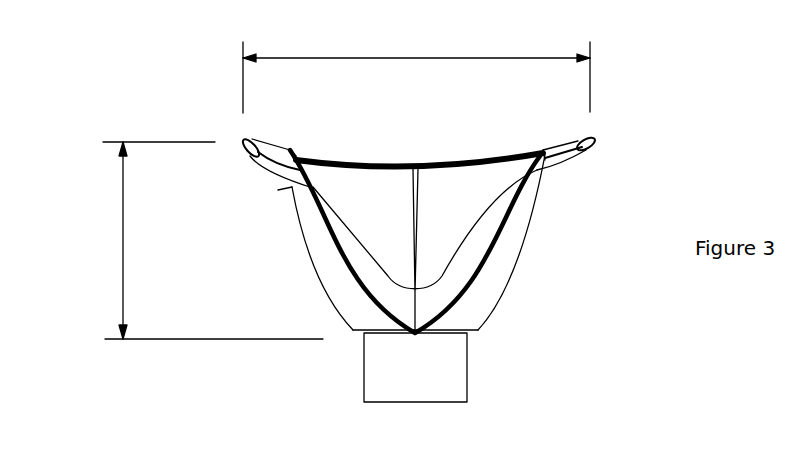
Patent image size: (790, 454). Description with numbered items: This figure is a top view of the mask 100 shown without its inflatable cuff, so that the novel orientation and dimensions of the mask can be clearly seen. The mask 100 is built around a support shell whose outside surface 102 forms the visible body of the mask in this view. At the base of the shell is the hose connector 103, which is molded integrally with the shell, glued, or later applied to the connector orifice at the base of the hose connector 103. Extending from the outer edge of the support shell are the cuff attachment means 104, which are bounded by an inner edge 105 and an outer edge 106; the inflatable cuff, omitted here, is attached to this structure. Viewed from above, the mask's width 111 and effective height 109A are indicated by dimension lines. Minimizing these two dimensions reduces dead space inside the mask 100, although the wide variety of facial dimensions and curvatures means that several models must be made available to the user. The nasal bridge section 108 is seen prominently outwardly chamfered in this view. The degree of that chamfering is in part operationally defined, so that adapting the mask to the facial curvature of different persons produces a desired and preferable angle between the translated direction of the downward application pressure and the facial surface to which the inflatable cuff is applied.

The mask 100 is at (449, 252).
The outside surface 102 is at (513, 238).
The hose connector 103 is at (452, 367).
The cuff attachment means 104 is at (553, 155).
The inner edge 105 is at (542, 152).
The outer edge 106 is at (593, 143).
The nasal bridge section 108 is at (367, 268).
The effective height 109A is at (188, 240).
The width 111 is at (416, 72).